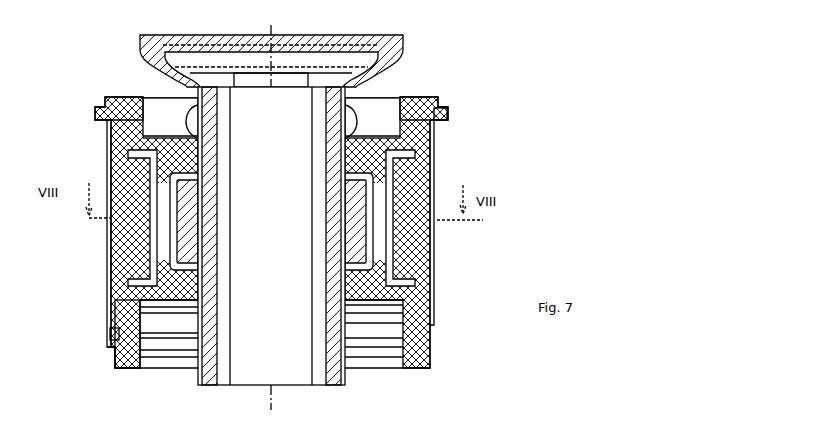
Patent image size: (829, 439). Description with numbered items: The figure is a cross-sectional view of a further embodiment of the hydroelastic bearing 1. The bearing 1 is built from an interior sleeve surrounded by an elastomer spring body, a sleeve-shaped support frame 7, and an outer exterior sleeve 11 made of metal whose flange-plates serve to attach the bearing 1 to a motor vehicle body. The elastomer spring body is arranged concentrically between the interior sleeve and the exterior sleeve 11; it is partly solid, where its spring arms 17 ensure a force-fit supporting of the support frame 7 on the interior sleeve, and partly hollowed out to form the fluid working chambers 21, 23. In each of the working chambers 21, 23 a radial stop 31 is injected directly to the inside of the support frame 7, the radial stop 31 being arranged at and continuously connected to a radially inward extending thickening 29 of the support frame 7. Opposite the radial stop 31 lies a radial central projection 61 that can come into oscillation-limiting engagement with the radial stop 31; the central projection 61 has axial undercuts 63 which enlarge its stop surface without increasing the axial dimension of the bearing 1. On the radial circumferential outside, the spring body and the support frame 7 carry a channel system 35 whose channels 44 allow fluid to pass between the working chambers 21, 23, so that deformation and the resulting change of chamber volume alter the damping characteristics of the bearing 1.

The hydroelastic bearing 1 is at (471, 101).
The support frame 7 is at (110, 163).
The exterior sleeve 11 is at (434, 283).
The spring arms 17 is at (350, 150).
The working chamber 21 is at (436, 242).
The working chamber 23 is at (110, 283).
The thickening 29 is at (440, 183).
The radial stop 31 is at (107, 255).
The channel system 35 is at (107, 322).
The channel 44 is at (110, 313).
The projection 61 is at (110, 230).
The undercut 63 is at (180, 300).